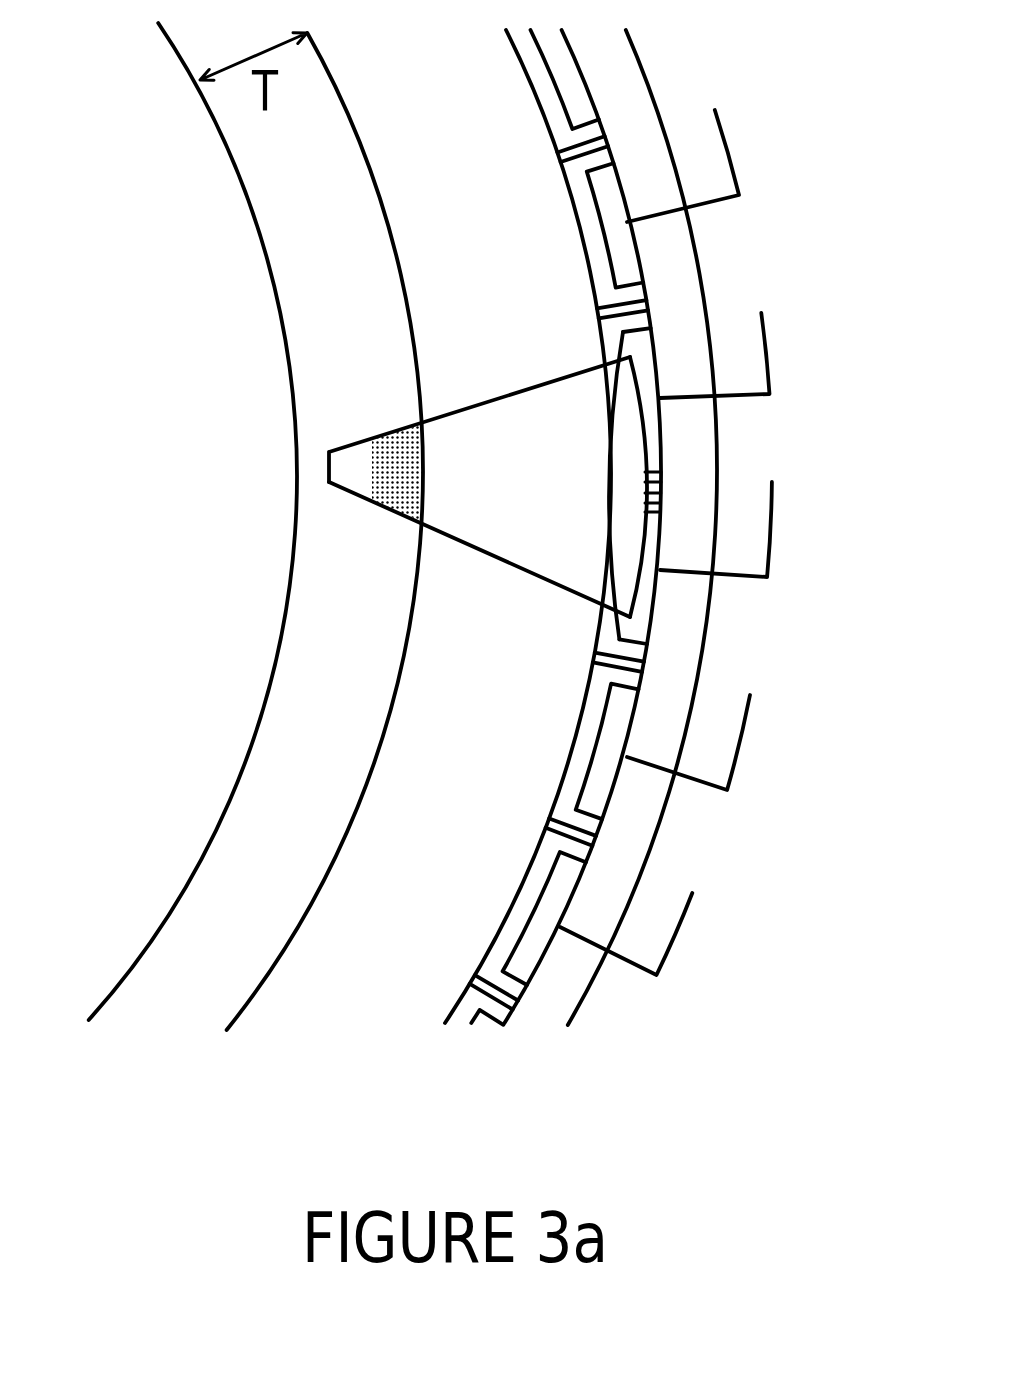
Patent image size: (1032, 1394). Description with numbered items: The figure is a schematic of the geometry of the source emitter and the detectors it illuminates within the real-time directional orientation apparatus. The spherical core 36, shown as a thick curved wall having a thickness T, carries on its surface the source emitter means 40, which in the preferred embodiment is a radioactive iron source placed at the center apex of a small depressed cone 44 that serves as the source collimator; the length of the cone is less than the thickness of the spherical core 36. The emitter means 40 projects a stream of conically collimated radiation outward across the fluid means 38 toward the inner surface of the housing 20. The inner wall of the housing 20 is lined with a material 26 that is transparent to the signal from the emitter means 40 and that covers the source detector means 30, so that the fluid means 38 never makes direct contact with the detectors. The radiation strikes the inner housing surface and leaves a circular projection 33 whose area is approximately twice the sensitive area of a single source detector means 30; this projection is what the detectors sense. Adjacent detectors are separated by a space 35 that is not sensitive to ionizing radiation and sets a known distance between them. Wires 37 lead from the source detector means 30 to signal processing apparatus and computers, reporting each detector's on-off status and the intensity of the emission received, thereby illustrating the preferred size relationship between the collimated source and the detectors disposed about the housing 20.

The housing 20 is at (662, 834).
The material 26 is at (499, 948).
The source detector means 30 is at (617, 245).
The circular projection 33 is at (634, 457).
The space 35 is at (613, 310).
The spherical core 36 is at (279, 958).
The wires 37 is at (733, 145).
The fluid means 38 is at (520, 743).
The source emitter means 40 is at (352, 526).
The cone 44 is at (383, 507).